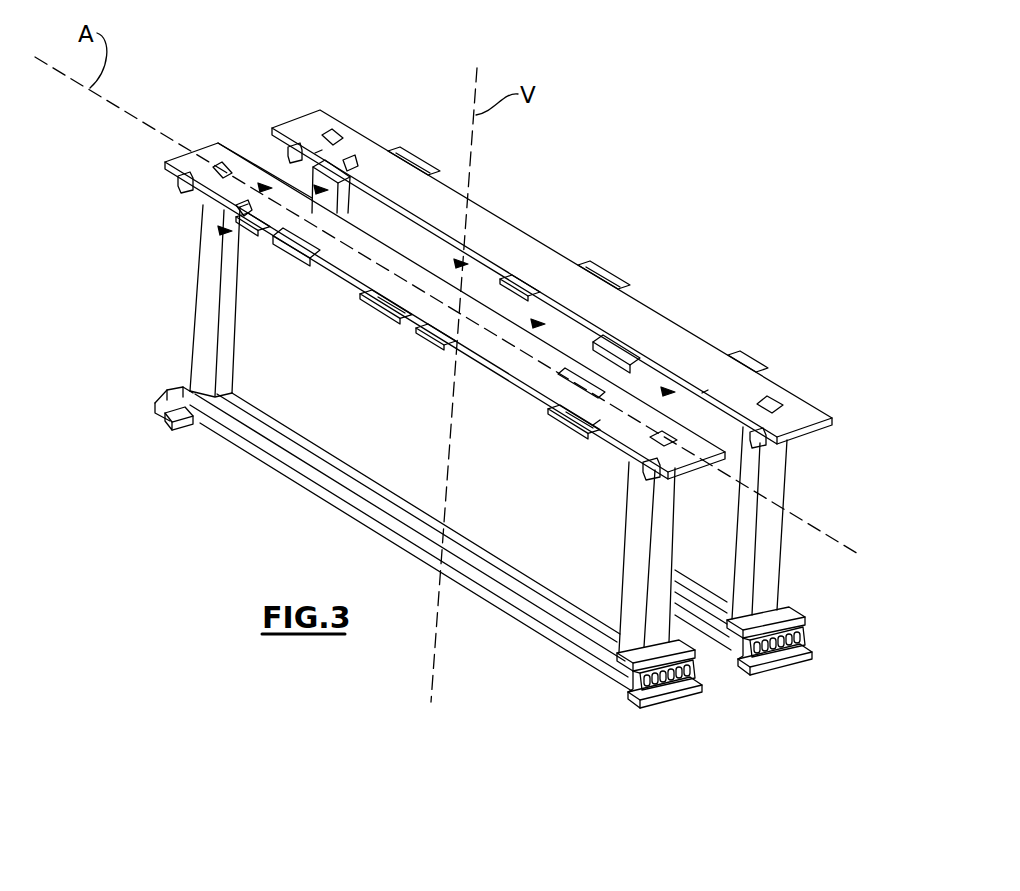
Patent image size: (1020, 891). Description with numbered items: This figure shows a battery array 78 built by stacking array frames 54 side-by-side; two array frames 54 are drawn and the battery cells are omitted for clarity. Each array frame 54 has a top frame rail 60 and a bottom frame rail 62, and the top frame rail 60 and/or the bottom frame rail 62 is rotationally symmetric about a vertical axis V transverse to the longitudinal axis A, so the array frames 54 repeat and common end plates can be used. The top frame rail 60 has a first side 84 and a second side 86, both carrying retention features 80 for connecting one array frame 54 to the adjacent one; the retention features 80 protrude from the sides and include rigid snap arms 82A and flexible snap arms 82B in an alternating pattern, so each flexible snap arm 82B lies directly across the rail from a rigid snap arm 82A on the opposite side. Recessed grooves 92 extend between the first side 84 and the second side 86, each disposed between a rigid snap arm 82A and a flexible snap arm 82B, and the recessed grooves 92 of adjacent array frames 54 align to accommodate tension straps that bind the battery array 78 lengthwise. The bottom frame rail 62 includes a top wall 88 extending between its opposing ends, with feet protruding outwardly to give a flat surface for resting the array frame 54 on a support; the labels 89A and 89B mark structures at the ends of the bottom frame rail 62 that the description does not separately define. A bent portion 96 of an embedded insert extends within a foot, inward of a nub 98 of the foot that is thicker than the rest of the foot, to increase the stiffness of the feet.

The array frame 54 is at (150, 270).
The top frame rail 60 is at (237, 155).
The bottom frame rail 62 is at (565, 650).
The battery array 78 is at (558, 190).
The retention features 80 is at (216, 234).
The rigid snap arms 82A is at (372, 330).
The flexible snap arms 82B is at (240, 228).
The first side 84 is at (178, 181).
The second side 86 is at (228, 150).
The top wall 88 is at (135, 423).
The foot connectors 89A is at (684, 628).
The foot block 89B is at (173, 430).
The recessed grooves 92 is at (315, 238).
The bent portion 96 is at (165, 163).
The nub 98 is at (695, 468).